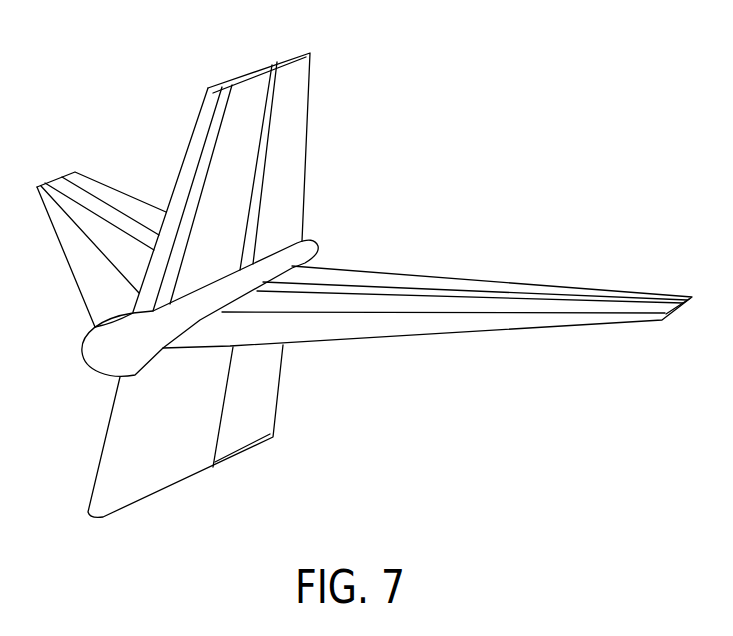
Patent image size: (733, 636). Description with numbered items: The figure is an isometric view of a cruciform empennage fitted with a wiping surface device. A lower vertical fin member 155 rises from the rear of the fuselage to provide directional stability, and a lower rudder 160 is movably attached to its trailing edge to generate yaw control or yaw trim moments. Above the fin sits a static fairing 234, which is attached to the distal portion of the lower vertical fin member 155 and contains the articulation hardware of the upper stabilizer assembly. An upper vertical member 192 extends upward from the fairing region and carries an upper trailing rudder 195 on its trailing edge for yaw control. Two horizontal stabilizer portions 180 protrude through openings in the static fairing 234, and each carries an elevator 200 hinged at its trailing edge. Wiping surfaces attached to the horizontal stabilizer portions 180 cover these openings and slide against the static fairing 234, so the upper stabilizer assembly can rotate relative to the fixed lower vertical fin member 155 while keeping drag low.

The lower vertical fin member 155 is at (118, 452).
The lower rudder 160 is at (262, 408).
The horizontal stabilizer portion 180 is at (83, 268).
The upper vertical member 192 is at (255, 92).
The upper trailing rudder 195 is at (288, 165).
The elevator 200 is at (121, 200).
The static fairing 234 is at (102, 358).